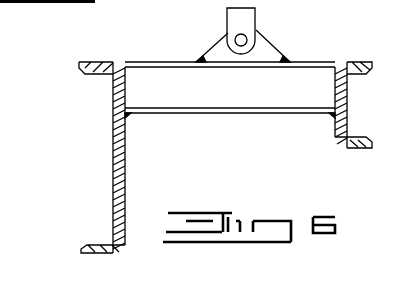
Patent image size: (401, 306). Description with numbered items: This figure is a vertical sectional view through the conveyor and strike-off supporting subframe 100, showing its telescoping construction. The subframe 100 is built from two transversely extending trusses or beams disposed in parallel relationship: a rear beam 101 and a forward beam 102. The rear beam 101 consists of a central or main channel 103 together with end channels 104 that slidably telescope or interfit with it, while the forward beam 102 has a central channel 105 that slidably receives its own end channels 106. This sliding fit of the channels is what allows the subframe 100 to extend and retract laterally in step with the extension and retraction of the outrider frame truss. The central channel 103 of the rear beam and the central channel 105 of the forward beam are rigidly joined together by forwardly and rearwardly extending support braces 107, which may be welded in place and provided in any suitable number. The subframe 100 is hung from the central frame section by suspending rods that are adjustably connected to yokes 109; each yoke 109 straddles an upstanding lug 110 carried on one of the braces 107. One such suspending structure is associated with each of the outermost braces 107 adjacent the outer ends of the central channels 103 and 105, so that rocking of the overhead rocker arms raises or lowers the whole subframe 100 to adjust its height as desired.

The conveyor and strike-off supporting subframe 100 is at (108, 57).
The rear beam 101 is at (96, 254).
The forward beam 102 is at (360, 148).
The central channel 103 is at (125, 136).
The end channels 104 is at (113, 150).
The central channel 105 is at (330, 148).
The end channels 106 is at (349, 100).
The support braces 107 is at (218, 114).
The yokes 109 is at (228, 20).
The upstanding lugs 110 is at (213, 48).